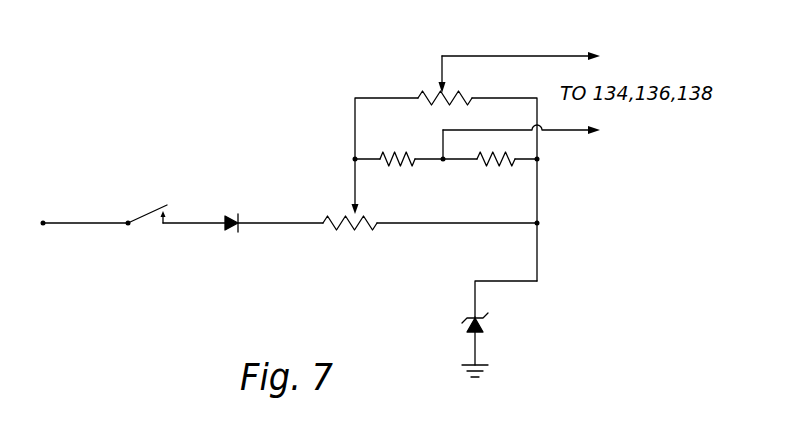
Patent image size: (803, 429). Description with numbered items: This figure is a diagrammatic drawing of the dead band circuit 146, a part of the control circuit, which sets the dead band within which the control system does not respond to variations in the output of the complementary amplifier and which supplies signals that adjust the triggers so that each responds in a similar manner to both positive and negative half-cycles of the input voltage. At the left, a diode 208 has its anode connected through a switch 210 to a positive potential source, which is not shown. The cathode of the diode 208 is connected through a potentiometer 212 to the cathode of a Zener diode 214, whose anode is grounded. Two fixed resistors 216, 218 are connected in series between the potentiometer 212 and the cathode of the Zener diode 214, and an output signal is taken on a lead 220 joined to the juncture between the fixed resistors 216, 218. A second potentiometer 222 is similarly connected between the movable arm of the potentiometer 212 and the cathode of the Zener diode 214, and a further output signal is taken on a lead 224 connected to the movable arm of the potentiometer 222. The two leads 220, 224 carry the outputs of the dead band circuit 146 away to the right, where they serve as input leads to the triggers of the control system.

The dead band circuit 146 is at (266, 150).
The diode 208 is at (228, 212).
The switch 210 is at (157, 203).
The potentiometer 212 is at (378, 230).
The Zener diode 214 is at (486, 327).
The fixed resistor 216 is at (390, 164).
The fixed resistor 218 is at (486, 163).
The lead 220 is at (565, 132).
The potentiometer 222 is at (448, 104).
The lead 224 is at (513, 56).